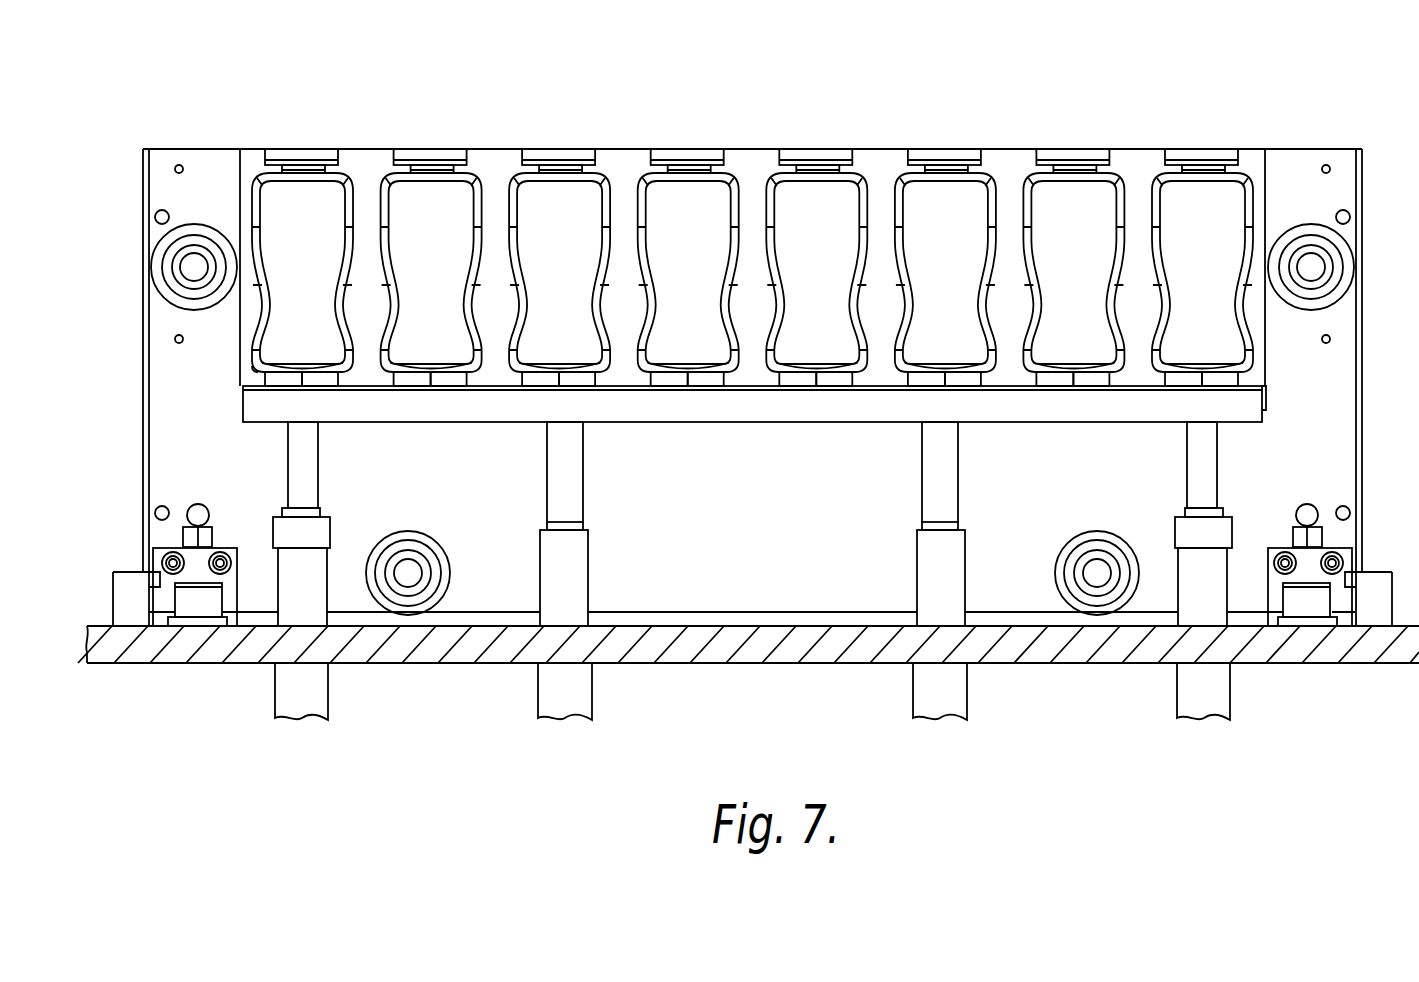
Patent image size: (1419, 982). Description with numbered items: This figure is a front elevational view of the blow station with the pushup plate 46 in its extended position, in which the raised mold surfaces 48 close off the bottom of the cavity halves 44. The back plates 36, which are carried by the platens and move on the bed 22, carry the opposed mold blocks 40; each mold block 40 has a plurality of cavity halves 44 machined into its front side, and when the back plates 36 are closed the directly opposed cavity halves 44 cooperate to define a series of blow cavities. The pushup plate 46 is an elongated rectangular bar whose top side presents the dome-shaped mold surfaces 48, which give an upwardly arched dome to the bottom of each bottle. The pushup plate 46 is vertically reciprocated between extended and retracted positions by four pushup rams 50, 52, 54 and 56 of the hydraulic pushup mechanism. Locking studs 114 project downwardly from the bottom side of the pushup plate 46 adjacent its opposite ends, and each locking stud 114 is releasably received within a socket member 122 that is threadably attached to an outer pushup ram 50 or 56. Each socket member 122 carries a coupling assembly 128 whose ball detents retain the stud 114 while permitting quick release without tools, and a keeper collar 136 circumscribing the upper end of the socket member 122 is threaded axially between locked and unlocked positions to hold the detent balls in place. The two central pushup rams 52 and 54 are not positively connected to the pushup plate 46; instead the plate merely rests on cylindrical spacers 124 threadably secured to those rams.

The bed 22 is at (720, 647).
The back plate 36 is at (1323, 140).
The mold block 40 is at (1133, 147).
The cavity halves 44 is at (313, 205).
The pushup plate 46 is at (240, 430).
The mold surfaces 48 is at (298, 368).
The pushup ram 50 is at (318, 698).
The pushup ram 52 is at (577, 693).
The pushup ram 54 is at (955, 695).
The pushup ram 56 is at (1215, 705).
The locking stud 114 is at (318, 438).
The socket member 122 is at (330, 580).
The cylindrical spacer 124 is at (570, 488).
The coupling assembly 128 is at (330, 508).
The keeper collar 136 is at (282, 532).